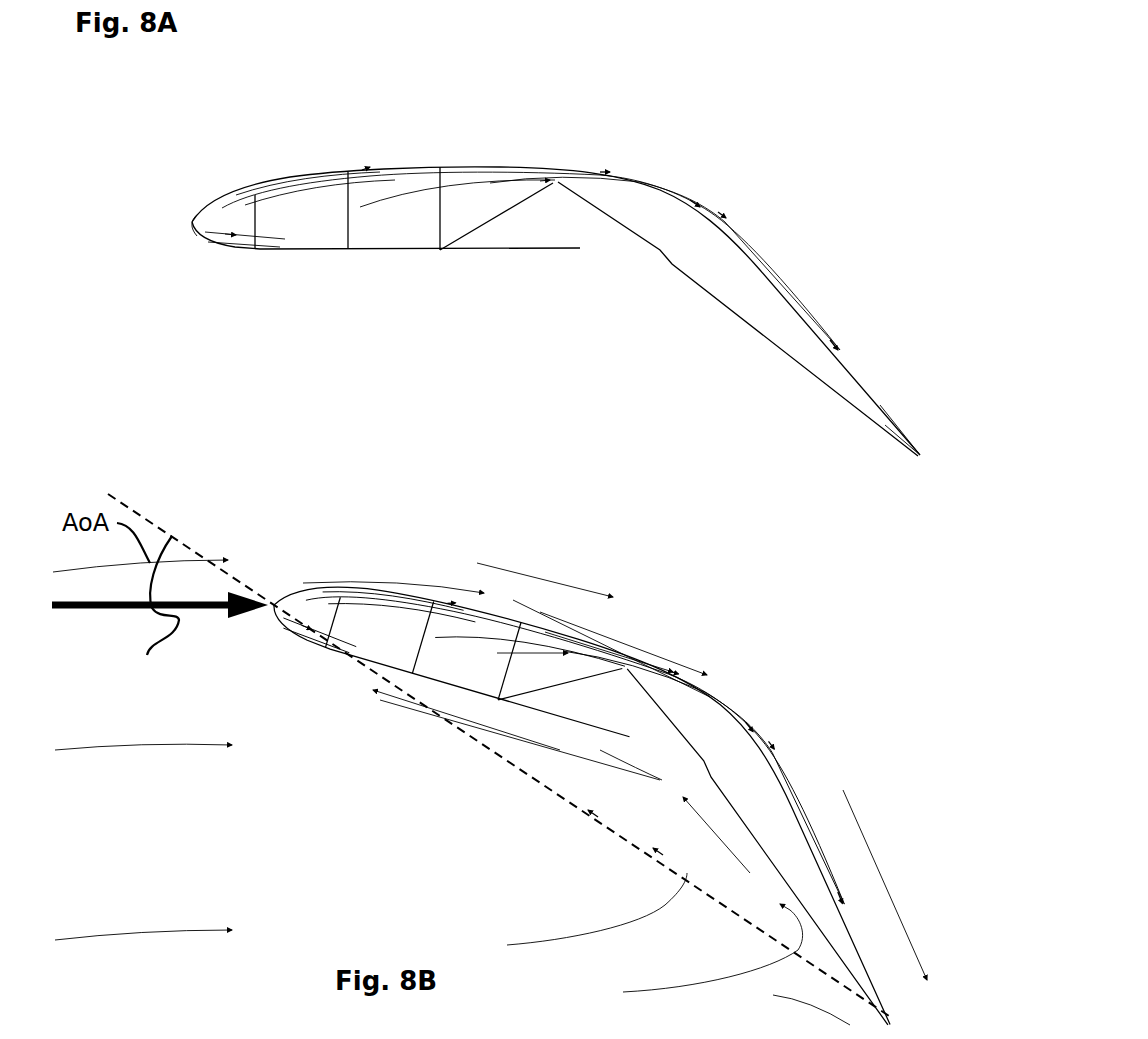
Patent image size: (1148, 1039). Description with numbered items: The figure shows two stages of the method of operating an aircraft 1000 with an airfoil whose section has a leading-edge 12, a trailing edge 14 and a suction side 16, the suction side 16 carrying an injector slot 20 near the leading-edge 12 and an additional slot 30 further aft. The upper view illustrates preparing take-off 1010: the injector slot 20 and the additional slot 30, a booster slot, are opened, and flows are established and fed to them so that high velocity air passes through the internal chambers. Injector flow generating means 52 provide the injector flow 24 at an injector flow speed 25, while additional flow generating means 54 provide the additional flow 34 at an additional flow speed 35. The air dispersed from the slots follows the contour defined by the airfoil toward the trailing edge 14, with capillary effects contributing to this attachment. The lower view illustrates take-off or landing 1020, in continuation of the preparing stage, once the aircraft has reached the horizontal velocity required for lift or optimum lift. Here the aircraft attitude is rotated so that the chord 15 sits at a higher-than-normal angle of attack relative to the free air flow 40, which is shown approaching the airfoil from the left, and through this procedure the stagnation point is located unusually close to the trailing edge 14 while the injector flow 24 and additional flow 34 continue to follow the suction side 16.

In FIG. 8A, the method of operating an aircraft 1000 is at (949, 81).
In FIG. 8A, the preparing take-off 1010 is at (486, 331).
In FIG. 8B, the take-off or landing 1020 is at (415, 883).
In FIG. 8A, the leading-edge 12 is at (186, 243).
In FIG. 8A, the trailing edge 14 is at (918, 426).
In FIG. 8B, the chord 15 is at (552, 786).
In FIG. 8A, the suction side 16 is at (422, 170).
In FIG. 8B, the suction side 16 is at (463, 602).
In FIG. 8A, the injector slot 20 is at (198, 203).
In FIG. 8B, the injector slot 20 is at (279, 588).
In FIG. 8A, the injector flow 24 is at (315, 144).
In FIG. 8B, the injector flow 24 is at (380, 541).
In FIG. 8A, the injector flow speed 25 is at (317, 165).
In FIG. 8B, the injector flow speed 25 is at (343, 570).
In FIG. 8A, the additional slot 30 is at (626, 173).
In FIG. 8B, the additional slot 30 is at (757, 793).
In FIG. 8A, the additional flow 34 is at (744, 250).
In FIG. 8B, the additional flow 34 is at (750, 712).
In FIG. 8A, the additional flow speed 35 is at (668, 194).
In FIG. 8B, the additional flow speed 35 is at (686, 658).
In FIG. 8B, the free air flow 40 is at (113, 737).
In FIG. 8A, the injector flow generating means 52 is at (258, 240).
In FIG. 8B, the injector flow generating means 52 is at (315, 633).
In FIG. 8A, the additional flow generating means 54 is at (490, 182).
In FIG. 8B, the additional flow generating means 54 is at (490, 637).